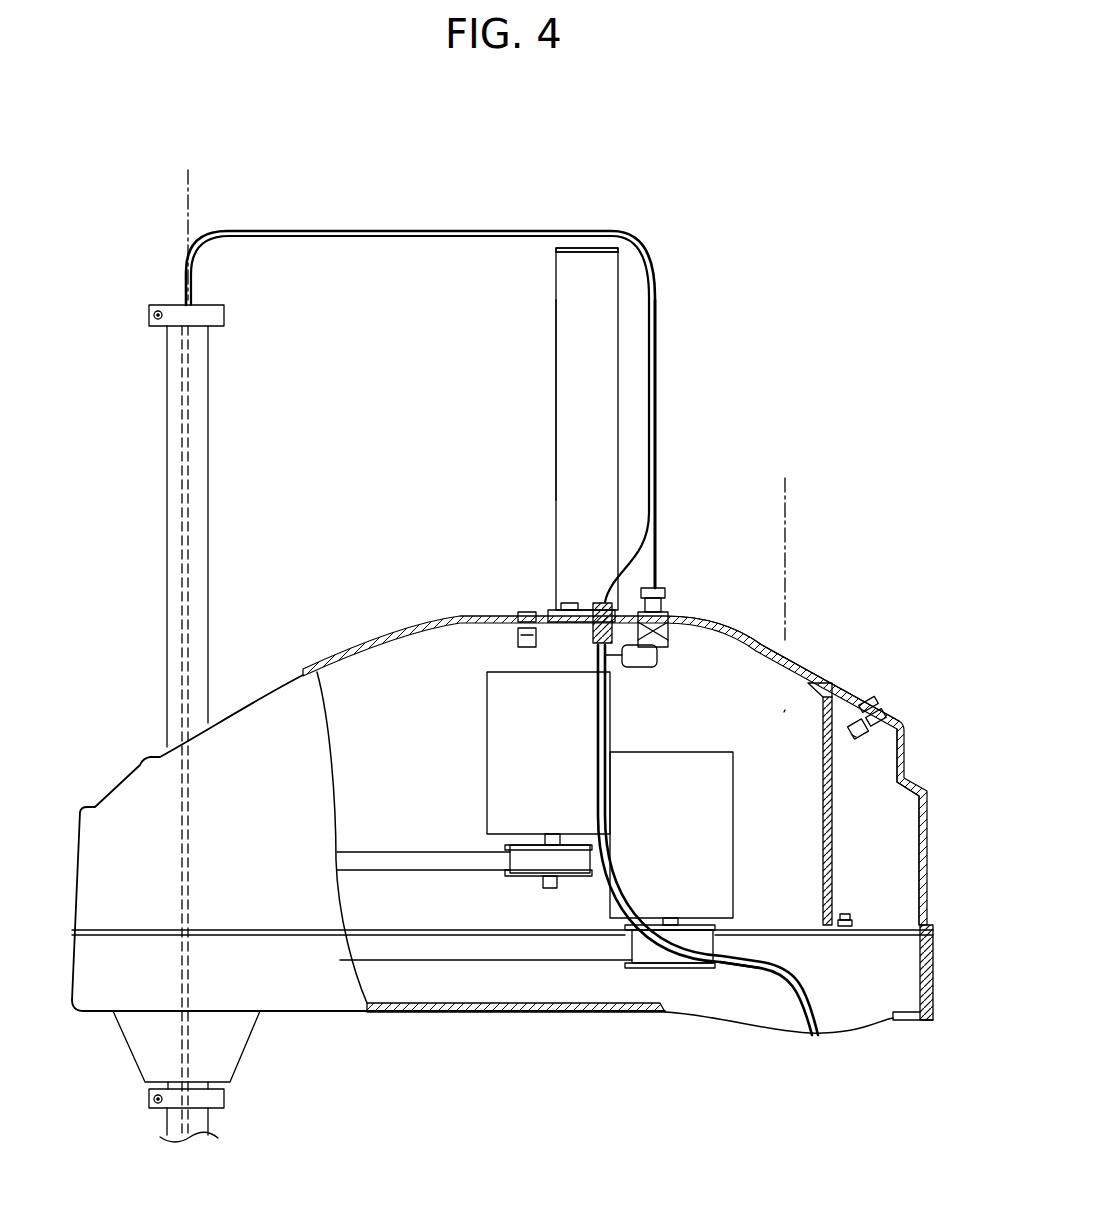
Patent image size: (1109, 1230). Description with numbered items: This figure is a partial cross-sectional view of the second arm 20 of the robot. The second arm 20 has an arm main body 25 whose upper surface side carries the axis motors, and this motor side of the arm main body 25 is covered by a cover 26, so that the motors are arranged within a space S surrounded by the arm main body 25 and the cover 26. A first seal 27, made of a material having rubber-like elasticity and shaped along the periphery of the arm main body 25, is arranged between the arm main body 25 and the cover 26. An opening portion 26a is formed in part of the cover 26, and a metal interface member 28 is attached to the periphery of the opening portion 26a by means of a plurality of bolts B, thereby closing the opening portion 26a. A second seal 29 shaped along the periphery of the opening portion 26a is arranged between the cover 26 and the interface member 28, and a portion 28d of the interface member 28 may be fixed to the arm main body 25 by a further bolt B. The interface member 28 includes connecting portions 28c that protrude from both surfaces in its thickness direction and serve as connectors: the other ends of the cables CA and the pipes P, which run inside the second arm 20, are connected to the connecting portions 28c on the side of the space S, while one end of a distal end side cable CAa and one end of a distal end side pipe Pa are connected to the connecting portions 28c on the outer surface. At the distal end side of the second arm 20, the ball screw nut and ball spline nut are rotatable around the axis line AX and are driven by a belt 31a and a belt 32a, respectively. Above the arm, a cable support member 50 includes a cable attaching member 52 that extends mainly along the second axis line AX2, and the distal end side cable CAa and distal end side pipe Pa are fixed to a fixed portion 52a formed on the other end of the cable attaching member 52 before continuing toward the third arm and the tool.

The axis line AX is at (187, 194).
The second axis line AX2 is at (788, 517).
The second arm 20 is at (312, 660).
The arm main body 25 is at (935, 1020).
The cover 26 is at (928, 795).
The opening portion 26a is at (548, 632).
The first seal 27 is at (927, 925).
The interface member 28 is at (752, 652).
The connecting portions 28c is at (600, 604).
The portion of the interface member 28d is at (822, 822).
The second seal 29 is at (858, 737).
The belt 31a is at (403, 852).
The belt 32a is at (452, 965).
The cable support member 50 is at (532, 346).
The cable attaching member 52 is at (556, 407).
The fixed portion 52a is at (556, 248).
The bolt B is at (523, 611).
The cables CA is at (800, 978).
The distal end side cable CAa is at (328, 238).
The pipes P is at (778, 1000).
The distal end side pipe Pa is at (657, 446).
The space S is at (784, 712).